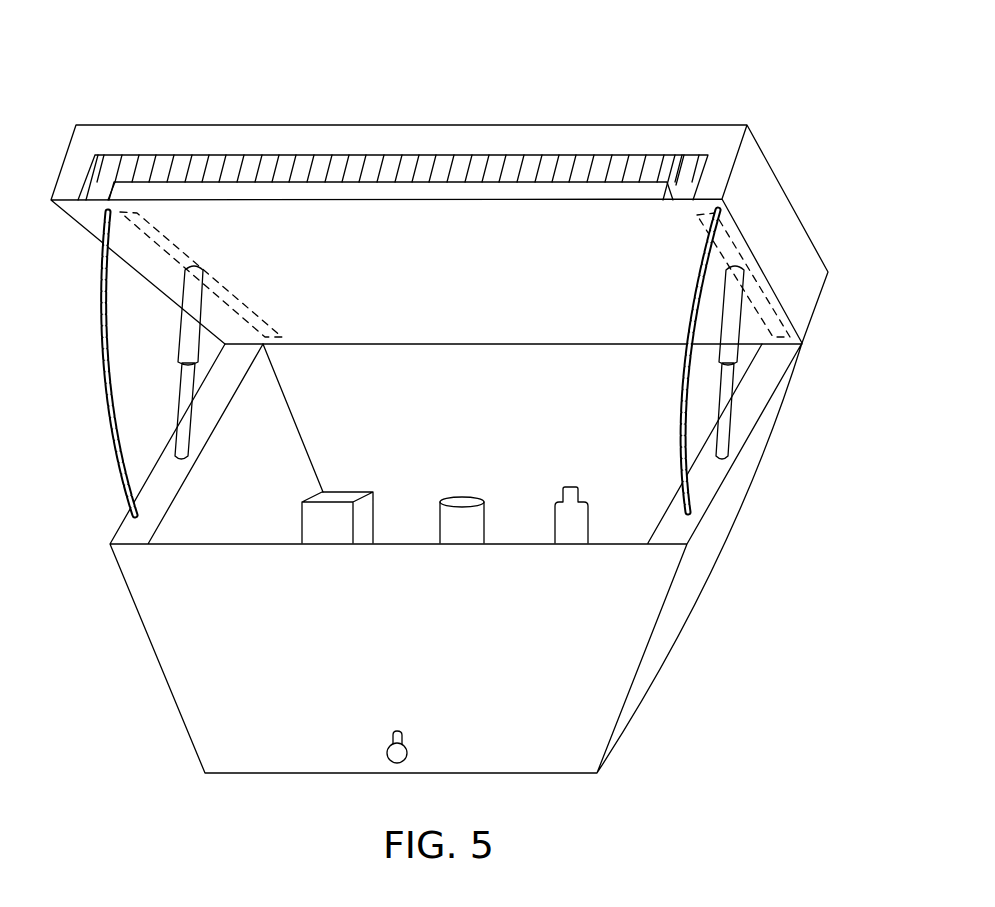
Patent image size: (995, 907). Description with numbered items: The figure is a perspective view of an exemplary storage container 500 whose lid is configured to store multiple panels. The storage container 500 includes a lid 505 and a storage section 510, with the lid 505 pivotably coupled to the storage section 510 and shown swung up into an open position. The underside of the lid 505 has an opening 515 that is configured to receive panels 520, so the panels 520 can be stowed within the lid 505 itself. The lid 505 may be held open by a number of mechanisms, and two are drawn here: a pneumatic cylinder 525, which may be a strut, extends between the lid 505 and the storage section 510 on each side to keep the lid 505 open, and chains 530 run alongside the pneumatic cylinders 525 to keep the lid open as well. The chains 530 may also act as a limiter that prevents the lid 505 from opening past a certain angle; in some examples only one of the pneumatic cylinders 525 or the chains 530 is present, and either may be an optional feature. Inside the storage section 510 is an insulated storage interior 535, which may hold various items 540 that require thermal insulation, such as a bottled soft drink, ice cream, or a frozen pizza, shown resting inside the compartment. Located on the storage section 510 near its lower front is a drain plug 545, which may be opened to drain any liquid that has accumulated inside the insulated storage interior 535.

The storage container 500 is at (149, 51).
The lid 505 is at (480, 196).
The storage section 510 is at (478, 558).
The opening 515 is at (578, 165).
The panels 520 is at (508, 190).
The pneumatic cylinder 525 is at (183, 313).
The chains 530 is at (118, 456).
The insulated storage interior 535 is at (490, 442).
The items 540 is at (335, 527).
The drain plug 545 is at (398, 755).